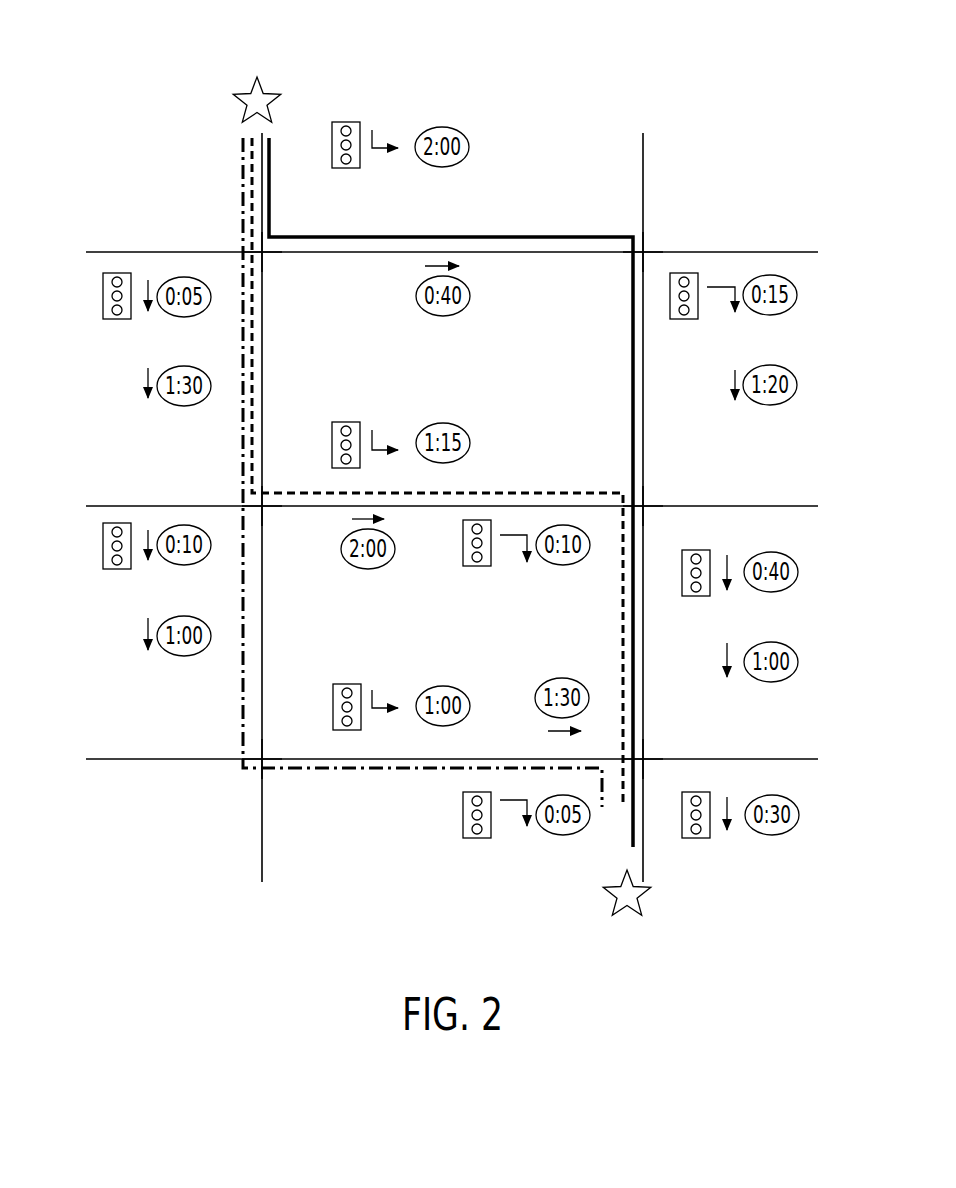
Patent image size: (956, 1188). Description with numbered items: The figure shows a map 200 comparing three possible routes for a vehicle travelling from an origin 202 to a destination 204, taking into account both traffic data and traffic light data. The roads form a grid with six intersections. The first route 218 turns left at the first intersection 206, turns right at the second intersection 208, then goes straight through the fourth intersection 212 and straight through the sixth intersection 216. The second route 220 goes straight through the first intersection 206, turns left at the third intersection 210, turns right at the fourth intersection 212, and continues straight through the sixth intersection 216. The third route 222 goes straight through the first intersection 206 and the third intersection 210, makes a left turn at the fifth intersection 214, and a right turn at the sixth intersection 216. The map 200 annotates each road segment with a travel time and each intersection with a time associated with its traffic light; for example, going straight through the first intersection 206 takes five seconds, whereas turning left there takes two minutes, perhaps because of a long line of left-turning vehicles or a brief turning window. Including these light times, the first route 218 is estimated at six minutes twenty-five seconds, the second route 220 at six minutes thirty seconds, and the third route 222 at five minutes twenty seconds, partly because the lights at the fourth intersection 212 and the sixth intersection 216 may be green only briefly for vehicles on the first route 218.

The map 200 is at (117, 83).
The origin 202 is at (265, 92).
The destination 204 is at (610, 887).
The first intersection 206 is at (222, 218).
The second intersection 208 is at (663, 233).
The third intersection 210 is at (277, 478).
The fourth intersection 212 is at (653, 493).
The fifth intersection 214 is at (235, 782).
The sixth intersection 216 is at (650, 752).
The first route 218 is at (510, 235).
The second route 220 is at (518, 490).
The third route 222 is at (383, 770).